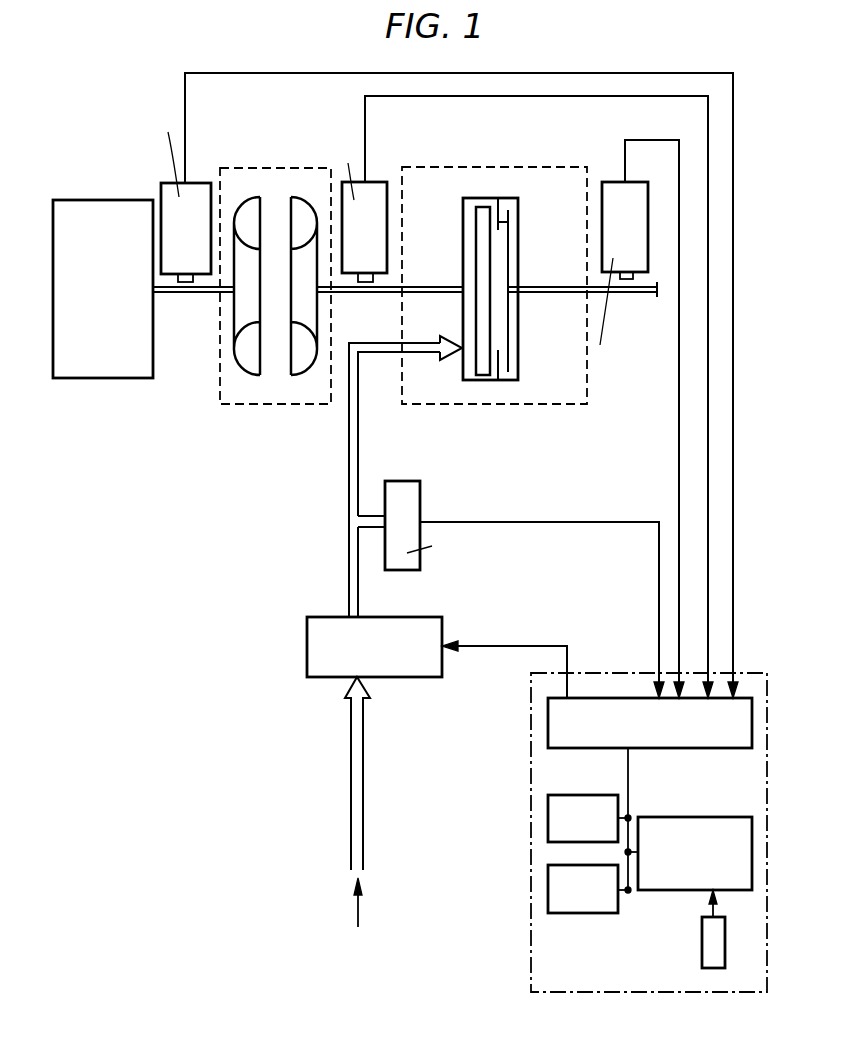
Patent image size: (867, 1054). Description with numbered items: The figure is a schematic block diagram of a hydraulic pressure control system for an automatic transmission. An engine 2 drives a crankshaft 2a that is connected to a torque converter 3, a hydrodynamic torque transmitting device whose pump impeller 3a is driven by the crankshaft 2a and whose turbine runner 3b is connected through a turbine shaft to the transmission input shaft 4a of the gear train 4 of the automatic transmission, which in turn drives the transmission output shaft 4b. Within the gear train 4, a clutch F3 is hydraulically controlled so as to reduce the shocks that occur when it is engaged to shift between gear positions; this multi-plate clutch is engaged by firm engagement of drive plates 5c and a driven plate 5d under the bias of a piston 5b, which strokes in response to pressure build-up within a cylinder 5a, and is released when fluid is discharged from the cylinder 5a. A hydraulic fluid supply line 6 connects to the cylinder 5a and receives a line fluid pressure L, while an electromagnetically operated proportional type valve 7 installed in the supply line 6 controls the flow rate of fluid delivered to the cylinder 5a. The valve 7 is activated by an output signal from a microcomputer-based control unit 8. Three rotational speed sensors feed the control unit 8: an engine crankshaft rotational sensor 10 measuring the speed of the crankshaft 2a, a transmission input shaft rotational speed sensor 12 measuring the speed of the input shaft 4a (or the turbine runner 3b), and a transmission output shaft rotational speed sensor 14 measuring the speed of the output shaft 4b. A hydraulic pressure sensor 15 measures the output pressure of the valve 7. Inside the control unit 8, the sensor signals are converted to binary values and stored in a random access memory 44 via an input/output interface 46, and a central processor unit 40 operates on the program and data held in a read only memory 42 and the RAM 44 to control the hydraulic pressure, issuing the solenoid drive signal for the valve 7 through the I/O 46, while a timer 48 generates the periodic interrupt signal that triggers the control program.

The engine 2 is at (100, 200).
The crankshaft 2a is at (187, 297).
The torque converter 3 is at (263, 168).
The pump impeller 3a is at (250, 362).
The turbine runner 3b is at (300, 362).
The gear train 4 is at (470, 167).
The transmission input shaft 4a is at (372, 296).
The transmission output shaft 4b is at (610, 292).
The cylinder 5a is at (490, 380).
The piston 5b is at (485, 338).
The drive plates 5c is at (508, 222).
The driven plate 5d is at (508, 254).
The hydraulic fluid supply line 6 is at (357, 440).
The electromagnetically operated proportional type valve 7 is at (325, 617).
The control unit 8 is at (528, 771).
The engine crankshaft rotational sensor 10 is at (167, 183).
The transmission input shaft rotational speed sensor 12 is at (374, 184).
The transmission output shaft rotational speed sensor 14 is at (634, 185).
The hydraulic pressure sensor 15 is at (420, 497).
The central processor unit 40 is at (693, 817).
The read only memory 42 is at (578, 795).
The random access memory 44 is at (597, 913).
The input/output interface 46 is at (670, 750).
The timer 48 is at (702, 935).
The clutch F3 is at (497, 192).
The line fluid pressure L is at (360, 908).